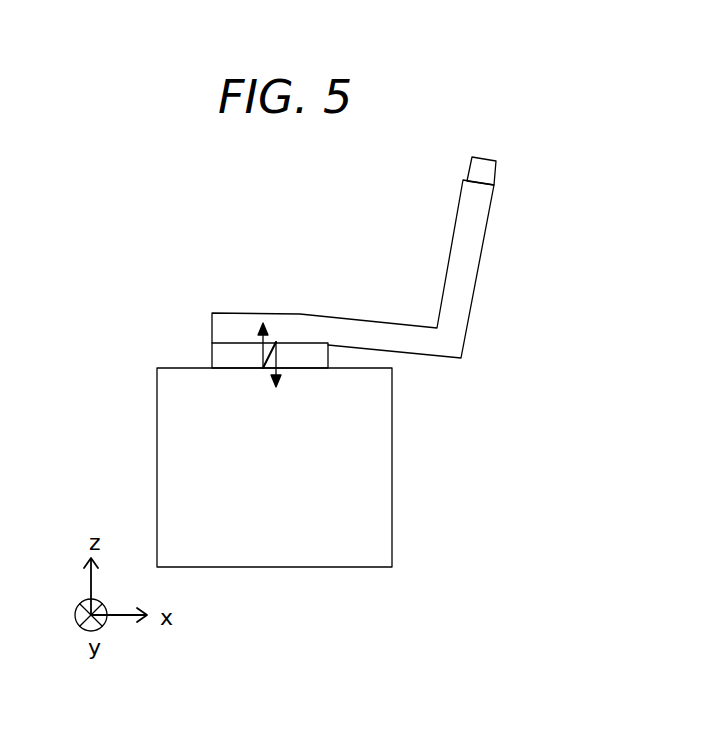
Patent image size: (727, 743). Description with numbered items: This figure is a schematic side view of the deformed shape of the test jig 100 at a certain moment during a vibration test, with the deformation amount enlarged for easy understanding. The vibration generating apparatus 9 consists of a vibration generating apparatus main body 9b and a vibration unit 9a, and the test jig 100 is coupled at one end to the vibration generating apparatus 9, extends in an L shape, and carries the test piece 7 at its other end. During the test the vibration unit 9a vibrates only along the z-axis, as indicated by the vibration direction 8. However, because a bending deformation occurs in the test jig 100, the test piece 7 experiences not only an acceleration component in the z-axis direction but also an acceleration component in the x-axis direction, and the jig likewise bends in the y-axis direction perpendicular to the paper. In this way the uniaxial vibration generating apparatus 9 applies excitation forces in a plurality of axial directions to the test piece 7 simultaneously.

The test piece 7 is at (487, 170).
The test jig 100 is at (467, 243).
The vibration direction 8 is at (262, 325).
The vibration generating apparatus 9 is at (124, 276).
The vibration unit 9a is at (218, 362).
The vibration generating apparatus main body 9b is at (177, 428).